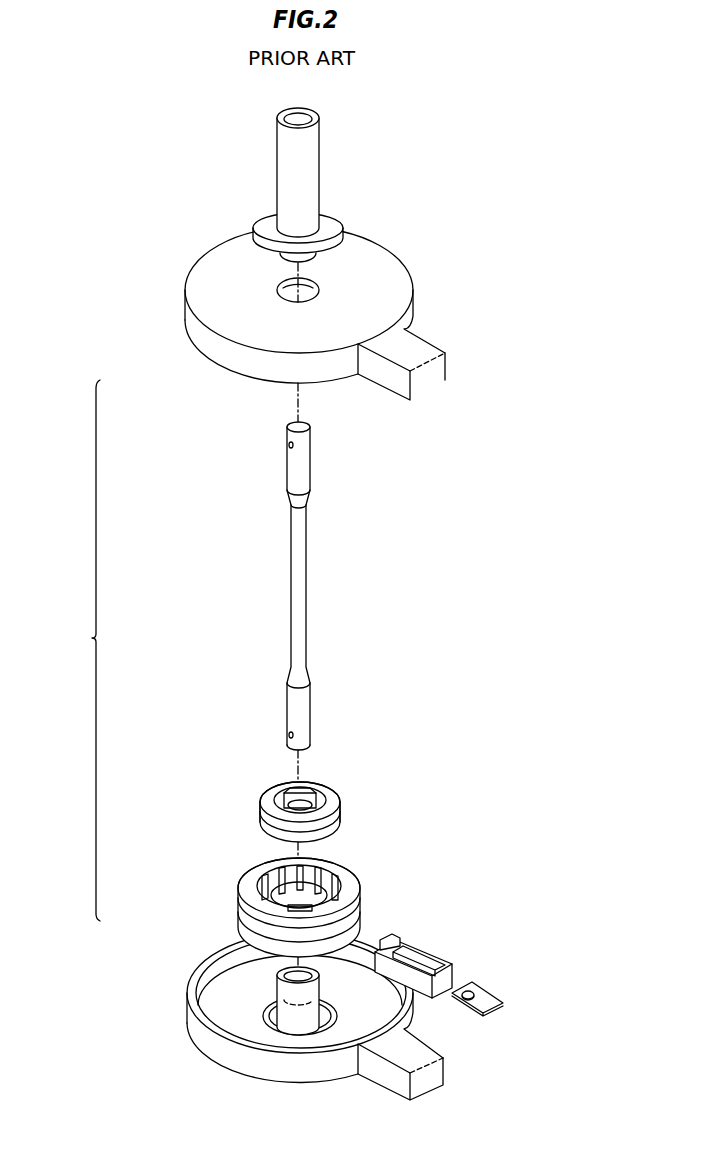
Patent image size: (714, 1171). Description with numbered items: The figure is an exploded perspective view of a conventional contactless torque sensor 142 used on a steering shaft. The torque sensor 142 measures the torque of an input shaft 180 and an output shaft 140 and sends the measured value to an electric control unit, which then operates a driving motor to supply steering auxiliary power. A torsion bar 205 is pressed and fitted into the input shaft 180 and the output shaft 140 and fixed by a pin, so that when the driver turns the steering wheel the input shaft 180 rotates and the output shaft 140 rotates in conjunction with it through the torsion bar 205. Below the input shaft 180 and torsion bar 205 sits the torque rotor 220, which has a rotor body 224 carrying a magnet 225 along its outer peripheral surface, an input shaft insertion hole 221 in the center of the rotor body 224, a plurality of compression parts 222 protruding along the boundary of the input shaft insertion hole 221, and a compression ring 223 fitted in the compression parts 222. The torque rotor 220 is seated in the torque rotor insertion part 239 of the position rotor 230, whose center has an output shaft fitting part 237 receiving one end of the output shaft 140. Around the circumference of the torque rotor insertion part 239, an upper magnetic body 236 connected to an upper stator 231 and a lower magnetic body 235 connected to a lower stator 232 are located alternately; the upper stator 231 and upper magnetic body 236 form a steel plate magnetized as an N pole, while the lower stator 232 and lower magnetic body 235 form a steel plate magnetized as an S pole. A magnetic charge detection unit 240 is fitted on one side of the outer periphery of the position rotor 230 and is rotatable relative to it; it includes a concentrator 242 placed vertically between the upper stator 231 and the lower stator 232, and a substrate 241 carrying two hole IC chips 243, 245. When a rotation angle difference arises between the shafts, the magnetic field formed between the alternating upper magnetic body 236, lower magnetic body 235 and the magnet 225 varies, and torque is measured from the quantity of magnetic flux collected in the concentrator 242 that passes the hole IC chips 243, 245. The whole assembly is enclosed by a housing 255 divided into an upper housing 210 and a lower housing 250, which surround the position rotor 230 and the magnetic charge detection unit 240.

The torque sensor 142 is at (494, 127).
The input shaft 180 is at (310, 161).
The upper housing 210 is at (208, 344).
The torsion bar 205 is at (300, 575).
The housing 255 is at (76, 650).
The torque rotor 220 is at (290, 776).
The input shaft insertion hole 221 is at (277, 787).
The compression parts 222 is at (330, 793).
The compression ring 223 is at (342, 810).
The rotor body 224 is at (265, 806).
The magnet 225 is at (262, 822).
The position rotor 230 is at (316, 853).
The upper stator 231 is at (245, 889).
The lower stator 232 is at (240, 914).
The lower magnetic body 235 is at (262, 864).
The upper magnetic body 236 is at (320, 862).
The output shaft fitting part 237 is at (257, 872).
The torque rotor insertion part 239 is at (333, 863).
The magnetic charge detection unit 240 is at (433, 917).
The substrate 241 is at (505, 987).
The concentrator 242 is at (388, 948).
The hole IC chip 243 is at (475, 1000).
The hole IC chip 245 is at (473, 988).
The lower housing 250 is at (190, 978).
The output shaft 140 is at (282, 1015).